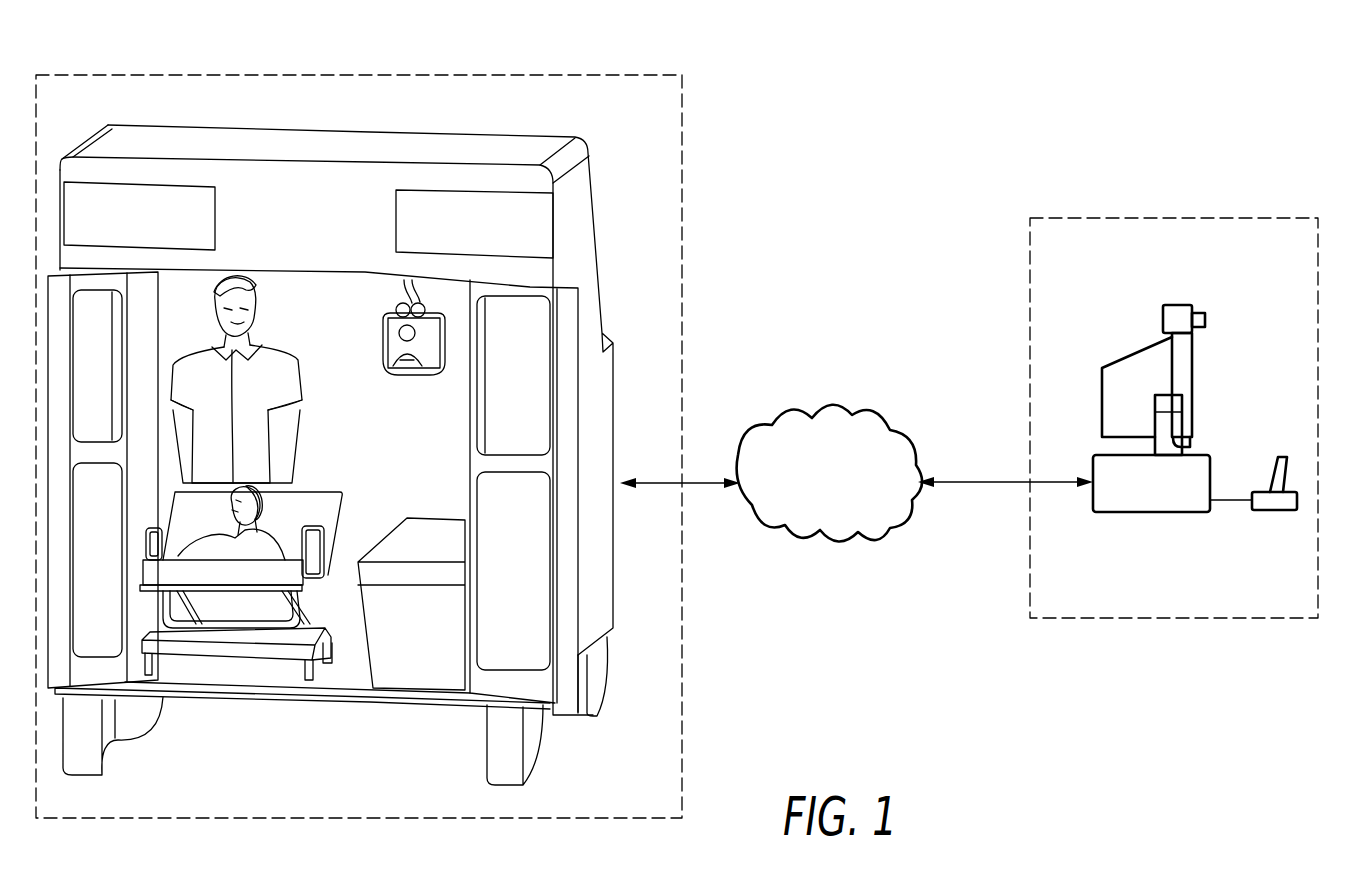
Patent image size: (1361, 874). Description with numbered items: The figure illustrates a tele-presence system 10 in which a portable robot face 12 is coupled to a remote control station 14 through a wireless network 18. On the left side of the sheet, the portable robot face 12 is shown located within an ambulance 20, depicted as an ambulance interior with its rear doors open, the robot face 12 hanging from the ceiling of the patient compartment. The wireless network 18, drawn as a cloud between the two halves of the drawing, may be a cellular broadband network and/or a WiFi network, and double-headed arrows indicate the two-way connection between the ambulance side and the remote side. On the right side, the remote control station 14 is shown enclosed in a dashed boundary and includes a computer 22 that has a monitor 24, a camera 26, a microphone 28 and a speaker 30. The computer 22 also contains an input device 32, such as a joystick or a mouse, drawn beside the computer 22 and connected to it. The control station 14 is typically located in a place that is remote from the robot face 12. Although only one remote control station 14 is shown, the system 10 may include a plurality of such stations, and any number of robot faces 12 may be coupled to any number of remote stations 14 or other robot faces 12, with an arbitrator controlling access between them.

The tele-presence system 10 is at (856, 402).
The portable robot face 12 is at (443, 342).
The remote control station 14 is at (1145, 527).
The wireless network 18 is at (830, 473).
The ambulance 20 is at (468, 203).
The computer 22 is at (1180, 503).
The monitor 24 is at (1182, 362).
The camera 26 is at (1170, 320).
The microphone 28 is at (1162, 397).
The speaker 30 is at (1182, 443).
The input device 32 is at (1278, 512).